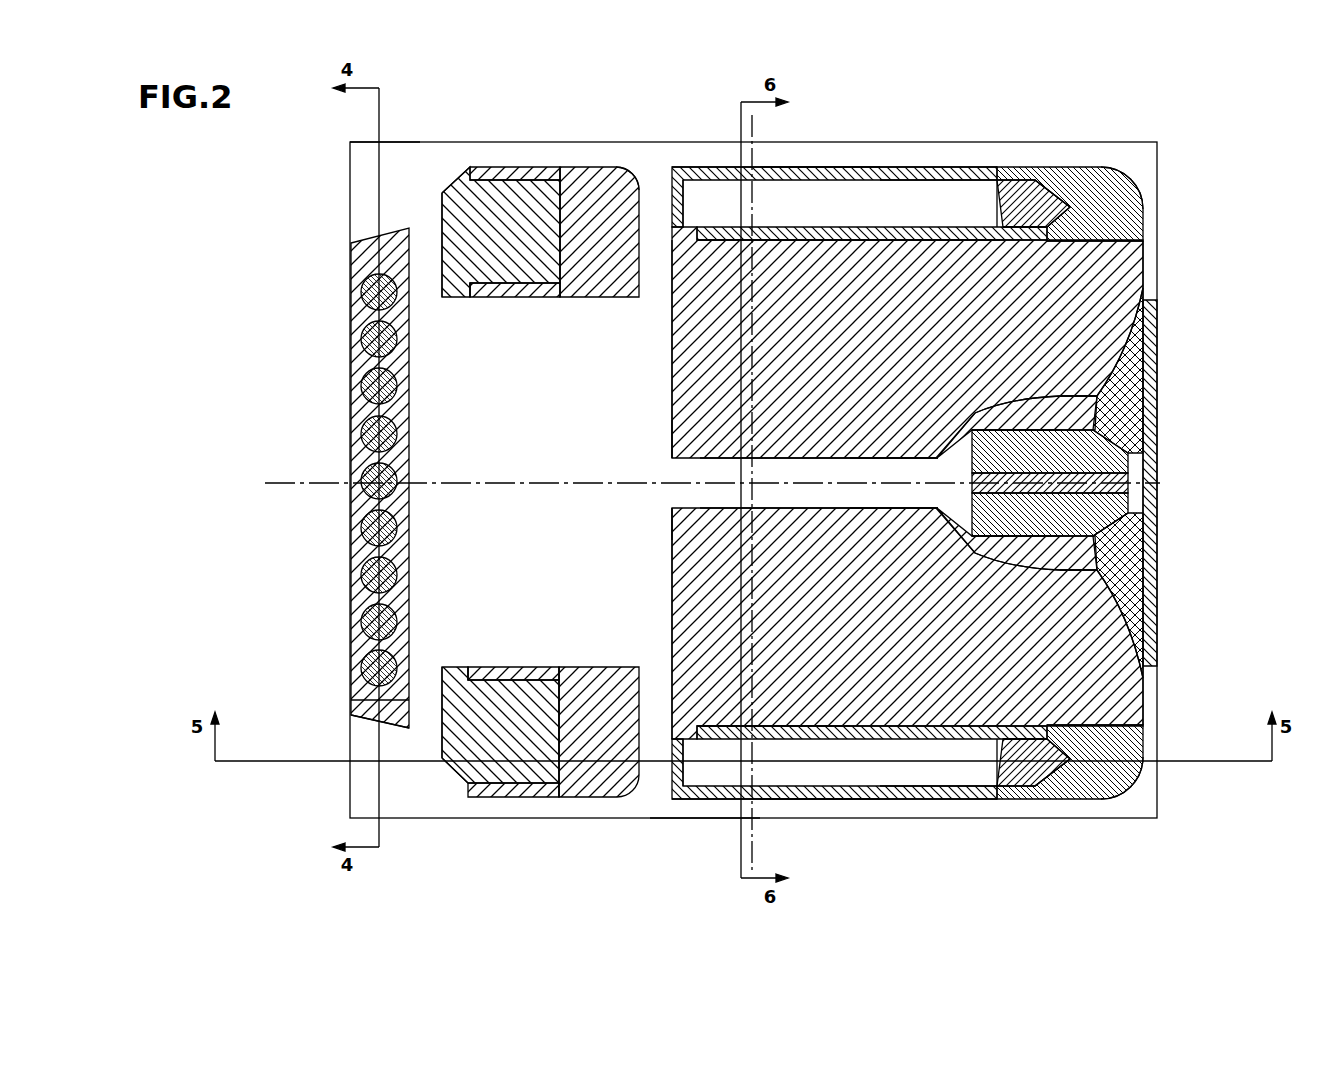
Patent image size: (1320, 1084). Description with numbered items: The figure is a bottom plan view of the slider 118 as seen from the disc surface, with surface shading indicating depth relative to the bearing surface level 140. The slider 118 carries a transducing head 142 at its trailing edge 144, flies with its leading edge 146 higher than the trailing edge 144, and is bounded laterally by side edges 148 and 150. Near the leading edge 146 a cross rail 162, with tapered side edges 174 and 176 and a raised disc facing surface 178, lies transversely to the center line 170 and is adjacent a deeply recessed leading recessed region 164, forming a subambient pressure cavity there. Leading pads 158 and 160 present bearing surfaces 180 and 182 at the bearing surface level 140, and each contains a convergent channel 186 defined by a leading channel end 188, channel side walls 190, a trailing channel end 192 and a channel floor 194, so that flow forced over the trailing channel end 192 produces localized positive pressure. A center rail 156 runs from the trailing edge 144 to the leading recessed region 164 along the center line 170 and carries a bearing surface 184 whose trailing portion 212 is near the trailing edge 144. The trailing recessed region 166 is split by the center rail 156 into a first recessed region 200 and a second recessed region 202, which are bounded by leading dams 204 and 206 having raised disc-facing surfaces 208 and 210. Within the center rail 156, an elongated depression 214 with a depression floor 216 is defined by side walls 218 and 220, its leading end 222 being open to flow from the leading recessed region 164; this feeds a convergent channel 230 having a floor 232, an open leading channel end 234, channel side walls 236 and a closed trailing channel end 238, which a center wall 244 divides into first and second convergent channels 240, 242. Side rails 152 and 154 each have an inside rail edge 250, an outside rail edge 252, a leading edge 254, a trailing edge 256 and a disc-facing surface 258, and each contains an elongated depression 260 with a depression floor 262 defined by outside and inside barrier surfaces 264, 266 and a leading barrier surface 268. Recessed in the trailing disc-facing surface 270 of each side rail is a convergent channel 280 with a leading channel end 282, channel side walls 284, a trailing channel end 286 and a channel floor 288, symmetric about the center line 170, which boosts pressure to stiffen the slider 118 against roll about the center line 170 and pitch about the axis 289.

The slider 118 is at (1130, 131).
The bearing surface level 140 is at (600, 175).
The transducing head 142 is at (1154, 478).
The trailing edge 144 is at (1152, 655).
The leading edge 146 is at (349, 153).
The side edge 148 is at (358, 141).
The side edge 150 is at (673, 804).
The side rail 152 is at (937, 162).
The side rail 154 is at (890, 800).
The center rail 156 is at (1112, 378).
The leading pad 158 is at (538, 165).
The leading pad 160 is at (548, 783).
The cross rail 162 is at (375, 700).
The leading recessed region 164 is at (520, 392).
The trailing recessed region 166 is at (825, 486).
The center line 170 is at (300, 478).
The tapered side edge 174 is at (396, 232).
The tapered side edge 176 is at (362, 720).
The disc facing surface 178 is at (368, 262).
The bearing surface 180 is at (618, 300).
The bearing surface 182 is at (600, 665).
The bearing surface 184 is at (1122, 580).
The convergent channel 186 is at (503, 181).
The leading channel end 188 is at (445, 205).
The channel side walls 190 is at (478, 175).
The trailing channel end 192 is at (560, 205).
The channel floor 194 is at (457, 192).
The first recessed region 200 is at (907, 342).
The second recessed region 202 is at (907, 623).
The leading dam 204 is at (672, 388).
The leading dam 206 is at (672, 546).
The disc-facing surface 208 is at (672, 422).
The disc-facing surface 210 is at (672, 513).
The trailing portion 212 is at (1107, 396).
The elongated depression 214 is at (786, 456).
The depression floor 216 is at (795, 510).
The side wall 218 is at (878, 456).
The side wall 220 is at (862, 510).
The leading end 222 is at (692, 467).
The convergent channel 230 is at (1007, 430).
The floor 232 is at (1132, 468).
The leading channel end 234 is at (988, 530).
The channel side walls 236 is at (1087, 391).
The trailing channel end 238 is at (1142, 522).
The first convergent channel 240 is at (1128, 437).
The second convergent channel 242 is at (1122, 543).
The center wall 244 is at (1040, 562).
The inside rail edge 250 is at (772, 245).
The outside rail edge 252 is at (855, 175).
The leading edge 254 is at (678, 178).
The trailing edge 256 is at (1133, 195).
The disc-facing surface 258 is at (1118, 172).
The elongated depression 260 is at (812, 205).
The depression floor 262 is at (882, 210).
The outside barrier surface 264 is at (778, 190).
The inside barrier surface 266 is at (877, 247).
The leading barrier surface 268 is at (702, 210).
The trailing disc-facing surface 270 is at (1110, 230).
The convergent channel 280 is at (1012, 236).
The leading channel end 282 is at (1000, 188).
The channel side walls 284 is at (1022, 195).
The trailing channel end 286 is at (1050, 200).
The channel floor 288 is at (1005, 208).
The axis 289 is at (760, 840).